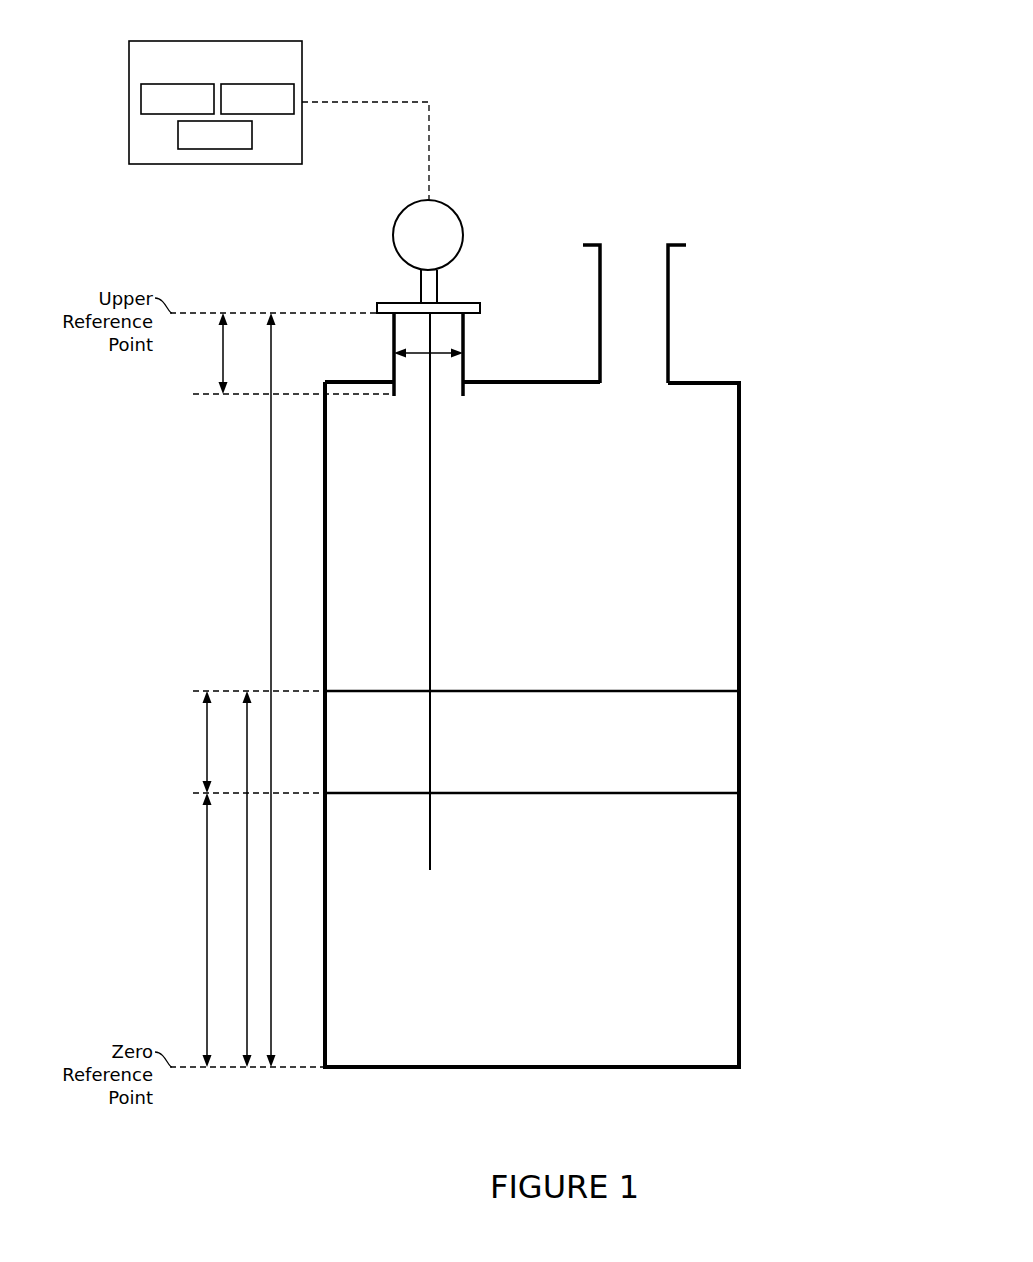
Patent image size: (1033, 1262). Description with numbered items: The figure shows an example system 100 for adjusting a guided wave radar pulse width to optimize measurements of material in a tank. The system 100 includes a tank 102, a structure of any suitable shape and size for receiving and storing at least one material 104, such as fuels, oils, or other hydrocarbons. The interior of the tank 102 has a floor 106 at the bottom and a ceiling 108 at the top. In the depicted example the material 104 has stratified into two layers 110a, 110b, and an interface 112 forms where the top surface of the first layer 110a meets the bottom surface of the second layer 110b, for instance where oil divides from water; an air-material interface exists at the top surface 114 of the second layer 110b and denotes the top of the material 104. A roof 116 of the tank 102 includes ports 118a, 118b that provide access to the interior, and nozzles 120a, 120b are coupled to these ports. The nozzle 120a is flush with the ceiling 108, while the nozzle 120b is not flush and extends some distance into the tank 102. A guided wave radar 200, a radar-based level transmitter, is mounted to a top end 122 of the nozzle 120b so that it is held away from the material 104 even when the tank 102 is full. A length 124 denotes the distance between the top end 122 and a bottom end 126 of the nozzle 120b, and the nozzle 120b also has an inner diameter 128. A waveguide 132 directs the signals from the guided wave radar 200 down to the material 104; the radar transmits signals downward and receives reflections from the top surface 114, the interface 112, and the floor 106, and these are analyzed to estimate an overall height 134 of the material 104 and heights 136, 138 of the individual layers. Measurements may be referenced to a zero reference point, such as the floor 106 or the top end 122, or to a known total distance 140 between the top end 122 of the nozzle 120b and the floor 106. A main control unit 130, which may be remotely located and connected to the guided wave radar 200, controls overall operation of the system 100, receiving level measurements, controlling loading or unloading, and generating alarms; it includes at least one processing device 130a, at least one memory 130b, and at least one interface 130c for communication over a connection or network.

The system 100 is at (746, 45).
The tank 102 is at (741, 432).
The material 104 is at (703, 896).
The floor 106 is at (616, 1054).
The ceiling 108 is at (702, 396).
The first layer 110a is at (725, 927).
The second layer 110b is at (703, 754).
The interface 112 is at (582, 793).
The top surface 114 is at (525, 691).
The roof 116 is at (709, 370).
The port 118a is at (624, 378).
The port 118b is at (405, 381).
The nozzle 120a is at (672, 302).
The nozzle 120b is at (465, 343).
The top end 122 is at (481, 309).
The length 124 is at (223, 350).
The bottom end 126 is at (465, 396).
The inner diameter 128 is at (446, 353).
The main control unit 130 is at (215, 41).
The processing device 130a is at (177, 99).
The memory 130b is at (257, 99).
The interface 130c is at (215, 135).
The waveguide 132 is at (431, 583).
The overall height 134 is at (247, 940).
The height 136 is at (207, 875).
The height 138 is at (207, 742).
The total distance 140 is at (271, 480).
The guided wave radar 200 is at (463, 232).